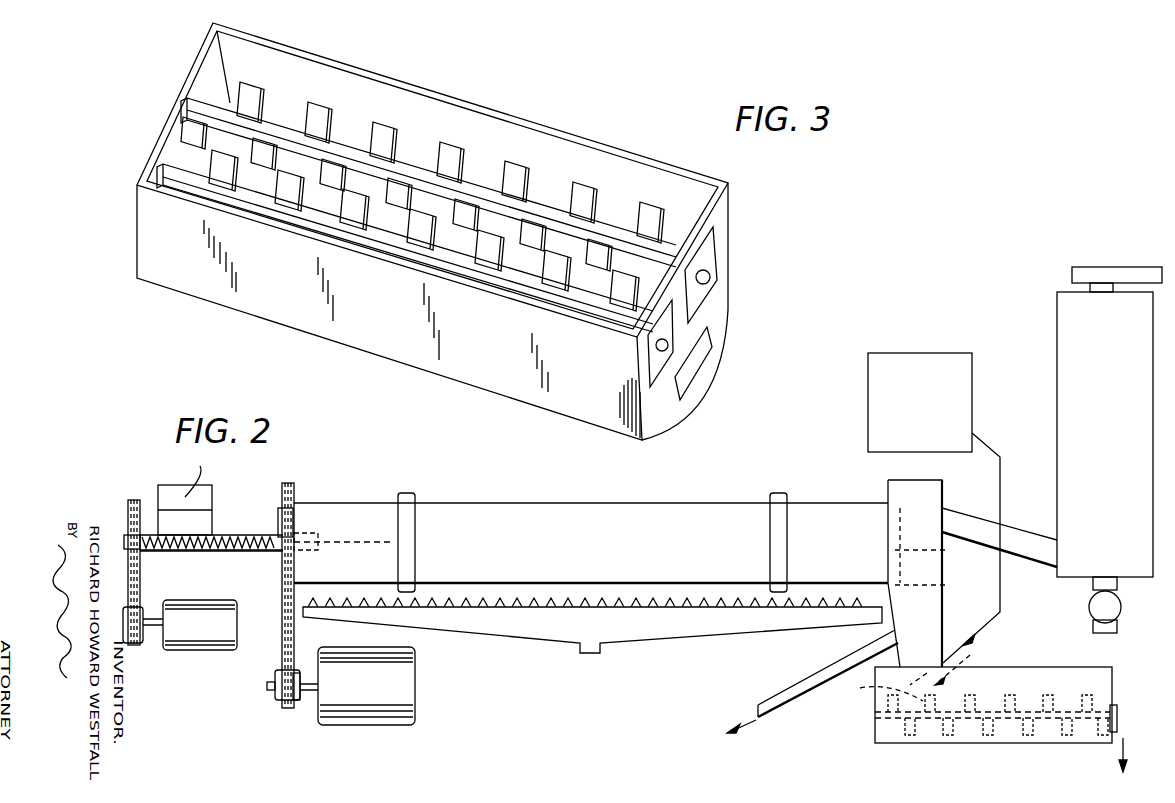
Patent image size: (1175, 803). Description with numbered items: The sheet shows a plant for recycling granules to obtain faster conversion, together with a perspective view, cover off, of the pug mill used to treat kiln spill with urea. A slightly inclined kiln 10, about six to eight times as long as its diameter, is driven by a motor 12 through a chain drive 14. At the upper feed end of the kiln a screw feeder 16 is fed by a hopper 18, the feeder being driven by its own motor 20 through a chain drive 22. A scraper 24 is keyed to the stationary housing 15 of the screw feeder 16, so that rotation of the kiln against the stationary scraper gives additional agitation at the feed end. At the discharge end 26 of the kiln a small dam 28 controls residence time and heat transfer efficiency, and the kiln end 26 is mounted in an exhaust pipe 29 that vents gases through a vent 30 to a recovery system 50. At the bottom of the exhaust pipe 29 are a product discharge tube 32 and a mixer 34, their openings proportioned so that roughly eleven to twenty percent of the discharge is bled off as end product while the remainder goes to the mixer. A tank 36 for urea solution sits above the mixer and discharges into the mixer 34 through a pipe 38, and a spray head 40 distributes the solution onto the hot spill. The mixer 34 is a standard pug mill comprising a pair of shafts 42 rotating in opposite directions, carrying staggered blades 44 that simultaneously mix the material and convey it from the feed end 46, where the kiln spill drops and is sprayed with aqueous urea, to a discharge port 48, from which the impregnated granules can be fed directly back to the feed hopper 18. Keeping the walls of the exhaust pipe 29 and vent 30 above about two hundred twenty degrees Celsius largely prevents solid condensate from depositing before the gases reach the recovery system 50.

In FIG. 2, the kiln 10 is at (630, 527).
In FIG. 2, the motor 12 is at (400, 688).
In FIG. 2, the chain drive 14 is at (283, 652).
In FIG. 2, the stationary housing 15 is at (252, 552).
In FIG. 2, the screw feeder 16 is at (239, 536).
In FIG. 2, the hopper 18 is at (210, 497).
In FIG. 2, the motor 20 is at (187, 652).
In FIG. 2, the chain drive 22 is at (140, 575).
In FIG. 2, the scraper 24 is at (362, 542).
In FIG. 2, the discharge end 26 is at (933, 545).
In FIG. 2, the dam 28 is at (933, 586).
In FIG. 2, the exhaust pipe 29 is at (925, 495).
In FIG. 2, the vent 30 is at (1017, 532).
In FIG. 2, the product discharge tube 32 is at (792, 688).
In FIG. 3, the mixer 34 is at (518, 119).
In FIG. 2, the mixer 34 is at (1034, 668).
In FIG. 2, the tank 36 is at (918, 353).
In FIG. 2, the pipe 38 is at (992, 621).
In FIG. 2, the spray head 40 is at (953, 666).
In FIG. 3, the shafts 42 is at (712, 277).
In FIG. 3, the blades 44 is at (586, 189).
In FIG. 3, the feed end 46 is at (372, 89).
In FIG. 2, the feed end 46 is at (876, 699).
In FIG. 3, the discharge port 48 is at (692, 368).
In FIG. 2, the discharge port 48 is at (1117, 727).
In FIG. 2, the recovery system 50 is at (1072, 322).